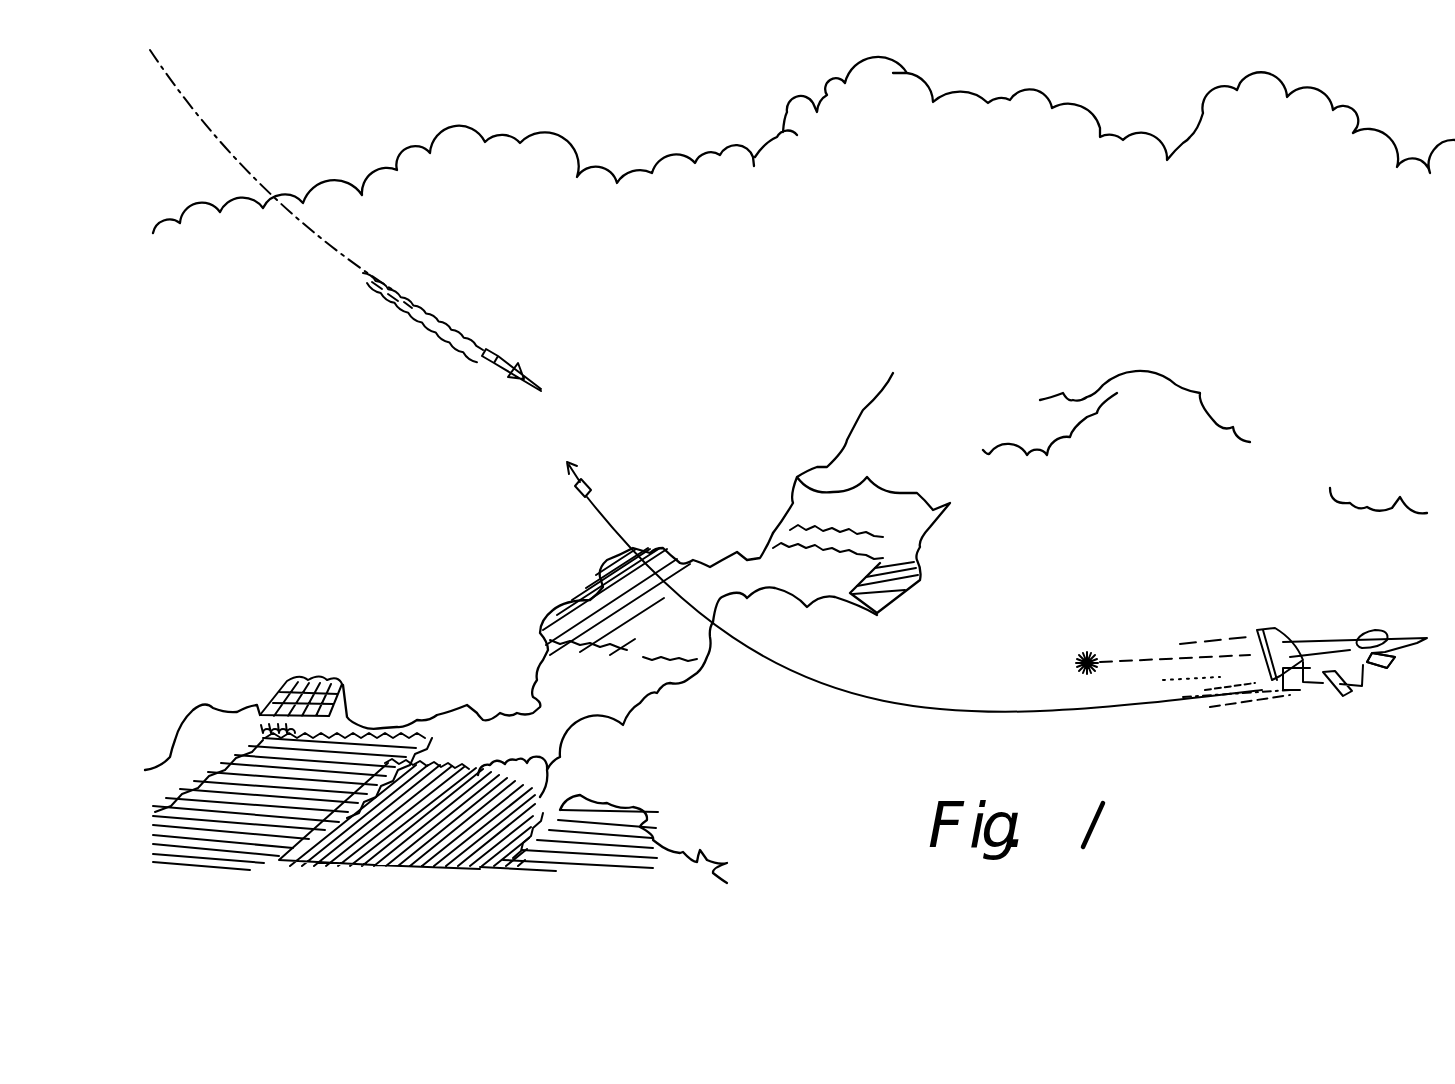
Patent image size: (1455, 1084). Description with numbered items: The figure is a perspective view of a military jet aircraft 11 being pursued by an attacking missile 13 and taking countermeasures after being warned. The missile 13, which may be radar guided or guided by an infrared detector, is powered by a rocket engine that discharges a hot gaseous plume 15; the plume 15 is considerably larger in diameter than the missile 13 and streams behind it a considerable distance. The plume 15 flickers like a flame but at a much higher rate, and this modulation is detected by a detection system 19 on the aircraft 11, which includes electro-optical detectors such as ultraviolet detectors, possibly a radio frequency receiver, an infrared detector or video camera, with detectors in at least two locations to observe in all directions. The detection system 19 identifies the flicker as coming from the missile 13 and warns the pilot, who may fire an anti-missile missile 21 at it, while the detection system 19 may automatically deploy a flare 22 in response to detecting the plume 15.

The military jet aircraft 11 is at (1385, 648).
The attacking missile 13 is at (527, 377).
The hot gaseous plume 15 is at (430, 313).
The detection system 19 is at (1251, 630).
The anti-missile missile 21 is at (577, 488).
The flare 22 is at (1087, 648).